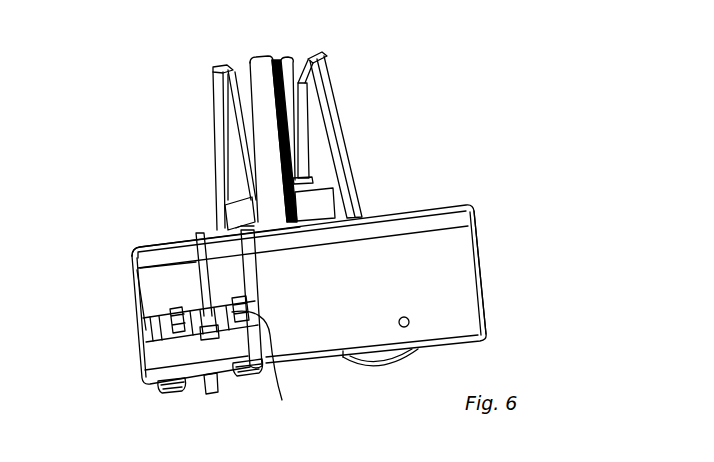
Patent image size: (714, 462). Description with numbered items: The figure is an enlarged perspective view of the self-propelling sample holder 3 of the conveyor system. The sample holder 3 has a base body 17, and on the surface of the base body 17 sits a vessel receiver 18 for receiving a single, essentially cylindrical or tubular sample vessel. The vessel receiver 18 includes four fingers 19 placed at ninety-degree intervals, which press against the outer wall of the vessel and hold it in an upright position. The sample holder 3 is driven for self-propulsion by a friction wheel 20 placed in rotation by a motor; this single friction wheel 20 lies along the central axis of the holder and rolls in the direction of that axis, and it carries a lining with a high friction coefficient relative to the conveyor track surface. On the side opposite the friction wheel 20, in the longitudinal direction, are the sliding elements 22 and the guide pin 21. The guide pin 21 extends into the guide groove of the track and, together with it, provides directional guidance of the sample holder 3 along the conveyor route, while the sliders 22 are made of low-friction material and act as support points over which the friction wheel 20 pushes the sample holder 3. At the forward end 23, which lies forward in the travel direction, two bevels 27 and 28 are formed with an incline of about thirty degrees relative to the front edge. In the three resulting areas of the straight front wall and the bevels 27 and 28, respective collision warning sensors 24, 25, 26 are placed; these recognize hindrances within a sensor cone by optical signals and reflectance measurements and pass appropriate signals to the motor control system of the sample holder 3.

The self-propelling sample holder 3 is at (480, 212).
The base body 17 is at (450, 270).
The vessel receiver 18 is at (350, 119).
The fingers 19 is at (263, 98).
The friction wheel 20 is at (382, 370).
The guide pin 21 is at (210, 397).
The sliding elements 22 is at (167, 392).
The forward end 23 is at (147, 288).
The collision warning sensor 24 is at (168, 334).
The collision warning sensor 25 is at (200, 337).
The collision warning sensor 26 is at (266, 370).
The bevel 27 is at (132, 287).
The bevel 28 is at (232, 278).